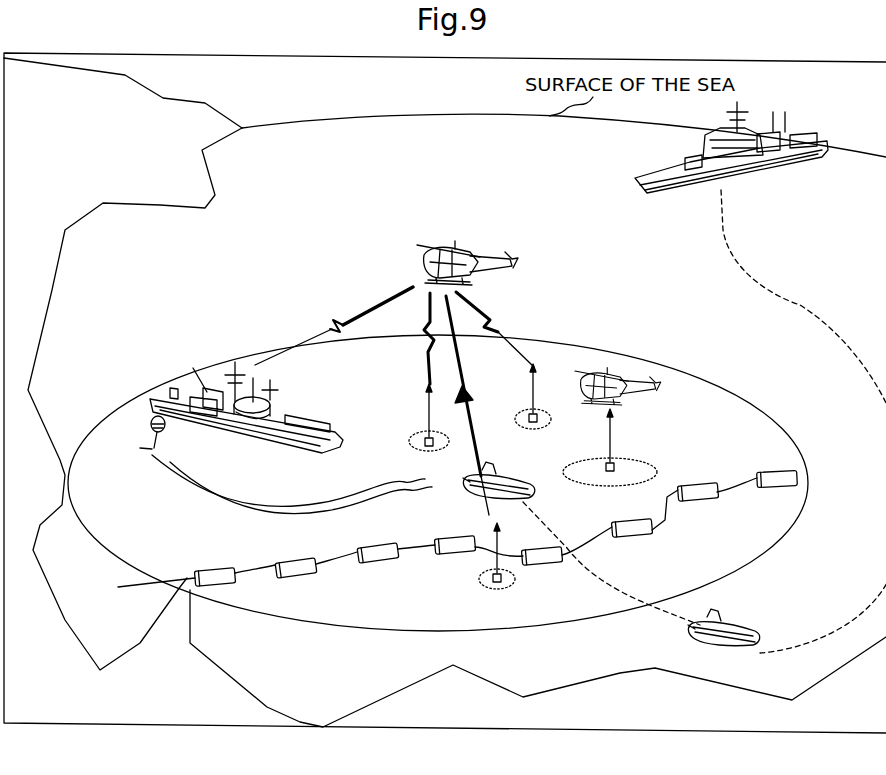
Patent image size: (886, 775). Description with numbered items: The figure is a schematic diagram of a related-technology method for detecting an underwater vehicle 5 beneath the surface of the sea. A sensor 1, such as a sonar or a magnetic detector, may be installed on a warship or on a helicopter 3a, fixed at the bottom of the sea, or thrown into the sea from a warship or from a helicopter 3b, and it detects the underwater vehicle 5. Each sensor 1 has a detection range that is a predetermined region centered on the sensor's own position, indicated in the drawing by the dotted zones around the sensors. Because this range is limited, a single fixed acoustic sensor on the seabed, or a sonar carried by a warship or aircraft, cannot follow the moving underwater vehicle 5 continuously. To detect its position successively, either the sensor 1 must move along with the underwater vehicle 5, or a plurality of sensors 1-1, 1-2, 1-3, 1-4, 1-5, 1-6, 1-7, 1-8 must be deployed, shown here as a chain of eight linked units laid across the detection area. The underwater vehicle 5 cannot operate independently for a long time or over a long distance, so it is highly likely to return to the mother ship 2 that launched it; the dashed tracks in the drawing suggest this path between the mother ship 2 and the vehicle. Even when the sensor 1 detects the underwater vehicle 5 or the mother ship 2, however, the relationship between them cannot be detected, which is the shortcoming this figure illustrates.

The sensor 1 is at (415, 433).
The mother ship 2 is at (302, 413).
The helicopter 3a is at (655, 393).
The helicopter 3b is at (492, 258).
The underwater vehicle 5 is at (527, 472).
The sensor 1-1 is at (212, 570).
The sensor 1-2 is at (297, 560).
The sensor 1-3 is at (388, 542).
The sensor 1-4 is at (452, 556).
The sensor 1-5 is at (556, 566).
The sensor 1-6 is at (638, 540).
The sensor 1-7 is at (690, 486).
The sensor 1-8 is at (773, 490).